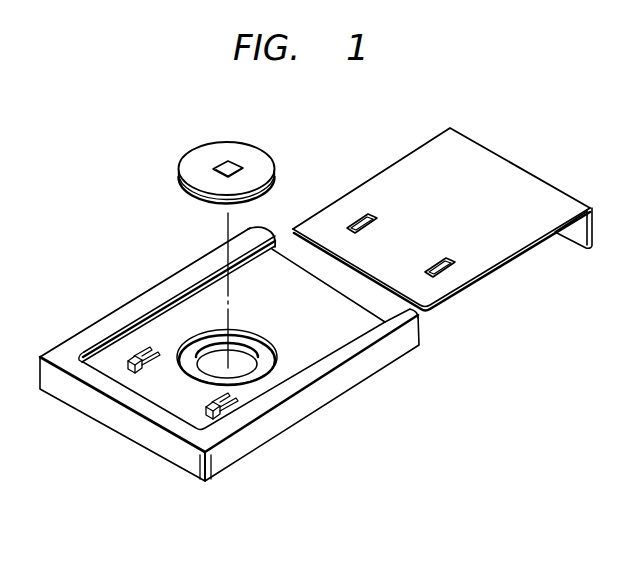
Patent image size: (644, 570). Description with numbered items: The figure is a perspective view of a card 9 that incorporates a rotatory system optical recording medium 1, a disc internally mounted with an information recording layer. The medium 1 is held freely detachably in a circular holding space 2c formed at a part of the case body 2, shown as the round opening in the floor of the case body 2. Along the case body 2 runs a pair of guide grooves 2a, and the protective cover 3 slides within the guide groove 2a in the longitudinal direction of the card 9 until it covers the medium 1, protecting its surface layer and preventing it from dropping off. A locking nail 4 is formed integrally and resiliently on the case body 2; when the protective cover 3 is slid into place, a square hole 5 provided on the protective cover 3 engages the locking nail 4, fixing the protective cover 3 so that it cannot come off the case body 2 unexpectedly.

The rotatory system optical recording medium 1 is at (245, 152).
The case body 2 is at (398, 354).
The guide groove 2a is at (278, 247).
The circular holding space 2c is at (263, 366).
The protective cover 3 is at (462, 147).
The locking nail 4 is at (132, 368).
The square hole 5 is at (357, 213).
The card 9 is at (150, 250).